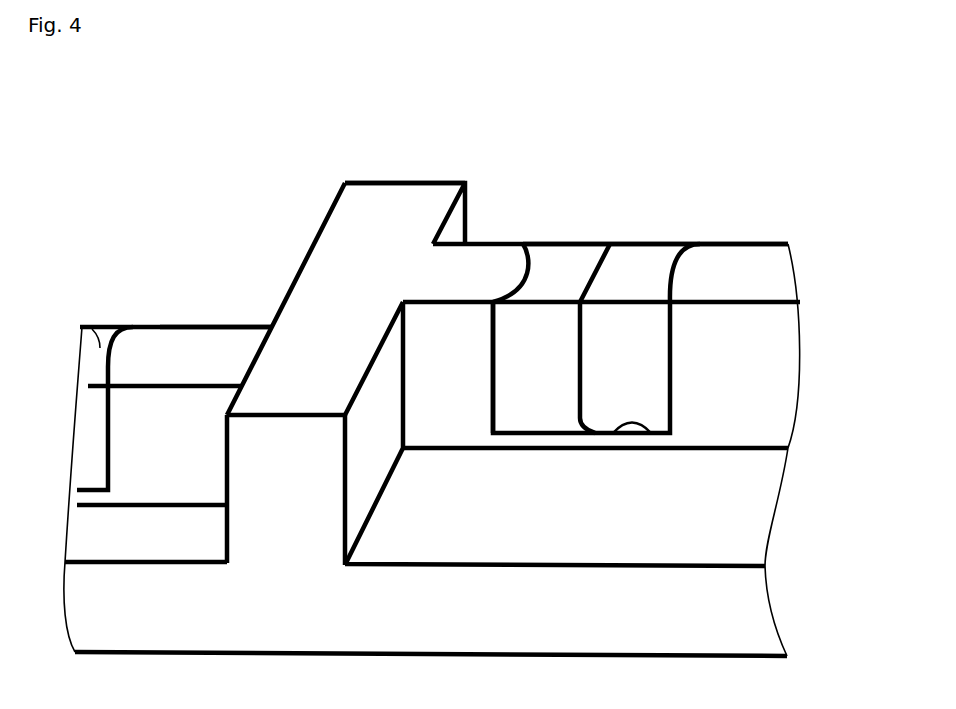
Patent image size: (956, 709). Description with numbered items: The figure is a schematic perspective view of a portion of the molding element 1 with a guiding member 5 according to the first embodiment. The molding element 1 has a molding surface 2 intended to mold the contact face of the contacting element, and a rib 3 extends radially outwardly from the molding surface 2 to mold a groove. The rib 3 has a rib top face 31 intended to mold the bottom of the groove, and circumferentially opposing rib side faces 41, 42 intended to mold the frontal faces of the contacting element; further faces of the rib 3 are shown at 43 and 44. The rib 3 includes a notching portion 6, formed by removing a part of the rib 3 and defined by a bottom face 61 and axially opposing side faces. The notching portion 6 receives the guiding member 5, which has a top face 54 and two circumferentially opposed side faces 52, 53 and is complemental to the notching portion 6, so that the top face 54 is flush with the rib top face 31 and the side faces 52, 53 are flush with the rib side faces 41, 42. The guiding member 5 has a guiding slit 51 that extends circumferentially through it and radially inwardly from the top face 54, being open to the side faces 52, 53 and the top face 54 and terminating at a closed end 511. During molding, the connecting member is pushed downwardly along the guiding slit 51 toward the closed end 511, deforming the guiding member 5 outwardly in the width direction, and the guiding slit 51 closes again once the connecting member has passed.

The molding element 1 is at (150, 195).
The molding surface 2 is at (127, 551).
The rib 3 is at (363, 183).
The rib top face 31 is at (320, 339).
The rib side face 41 is at (155, 464).
The rib side face 42 is at (210, 326).
The side surface of mesa 43 is at (372, 452).
The inclined side surface 44 is at (315, 237).
The guiding member 5 is at (68, 326).
The notching portion 6 is at (652, 218).
The guiding slit 51 is at (590, 244).
The side face 52 is at (527, 333).
The side face 53 is at (550, 244).
The top face 54 is at (625, 267).
The bottom face 61 is at (650, 433).
The closed end 511 is at (583, 420).